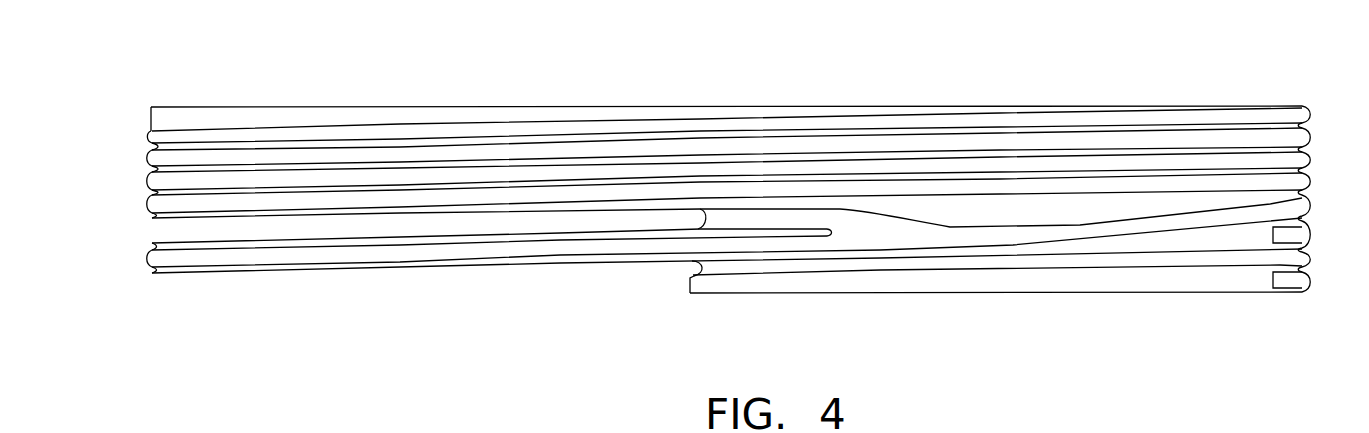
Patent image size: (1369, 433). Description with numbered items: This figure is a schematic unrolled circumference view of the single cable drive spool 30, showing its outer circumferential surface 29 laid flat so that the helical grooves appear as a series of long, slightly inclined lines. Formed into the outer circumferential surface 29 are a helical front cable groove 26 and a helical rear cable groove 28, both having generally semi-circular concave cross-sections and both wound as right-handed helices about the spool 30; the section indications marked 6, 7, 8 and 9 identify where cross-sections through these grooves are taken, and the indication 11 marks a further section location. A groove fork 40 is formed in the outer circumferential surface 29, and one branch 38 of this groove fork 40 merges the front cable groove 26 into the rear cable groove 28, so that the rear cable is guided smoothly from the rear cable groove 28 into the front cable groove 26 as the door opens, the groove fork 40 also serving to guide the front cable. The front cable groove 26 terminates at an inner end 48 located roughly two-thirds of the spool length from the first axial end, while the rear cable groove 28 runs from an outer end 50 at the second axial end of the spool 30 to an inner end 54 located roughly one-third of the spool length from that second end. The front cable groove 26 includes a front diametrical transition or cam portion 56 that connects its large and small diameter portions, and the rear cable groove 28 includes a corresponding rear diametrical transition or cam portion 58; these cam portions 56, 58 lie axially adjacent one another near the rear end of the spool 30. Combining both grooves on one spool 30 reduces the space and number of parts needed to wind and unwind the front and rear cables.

The outer circumferential surface 29 is at (195, 115).
The spool 30 is at (266, 104).
The front cable groove 26 is at (467, 128).
The front diametrical transition or cam portion 56 is at (700, 211).
The rear diametrical transition or cam portion 58 is at (690, 263).
The branch 38 is at (785, 242).
The inner end 54 is at (835, 240).
The groove fork 40 is at (872, 232).
The rear cable groove 28 is at (1078, 262).
The inner end 48 is at (1290, 234).
The outer end 50 is at (1285, 282).
The section line 7- 7 is at (413, 102).
The section line 8- 8 is at (700, 100).
The section line 9- 9 is at (998, 100).
The section line 6- 6 is at (1275, 102).
The section line 11- 11 is at (1115, 432).